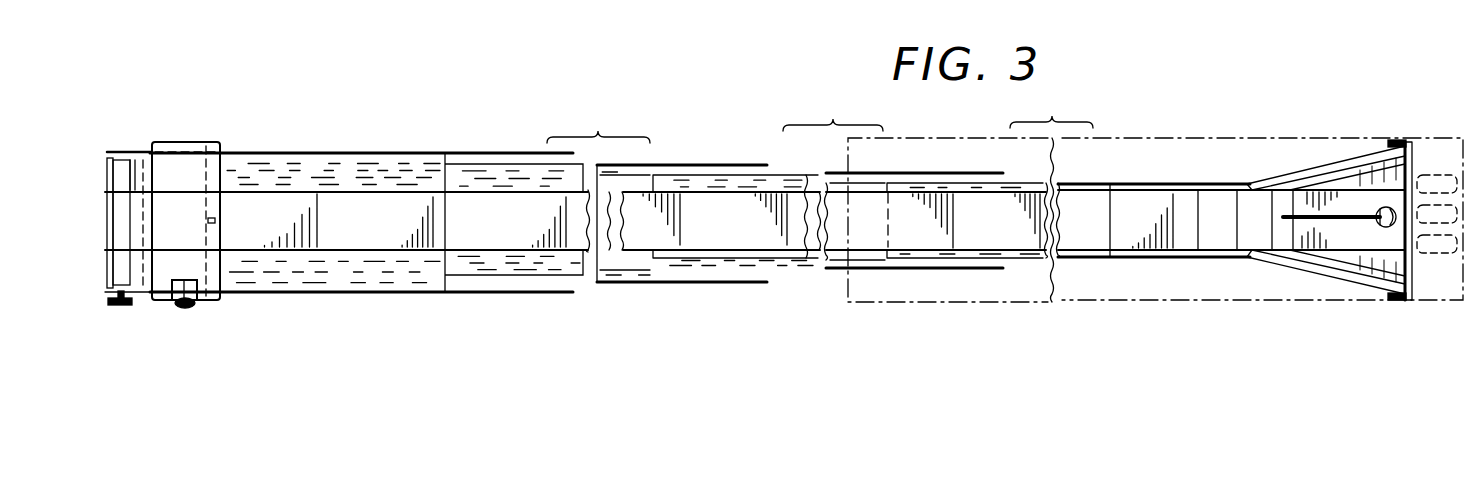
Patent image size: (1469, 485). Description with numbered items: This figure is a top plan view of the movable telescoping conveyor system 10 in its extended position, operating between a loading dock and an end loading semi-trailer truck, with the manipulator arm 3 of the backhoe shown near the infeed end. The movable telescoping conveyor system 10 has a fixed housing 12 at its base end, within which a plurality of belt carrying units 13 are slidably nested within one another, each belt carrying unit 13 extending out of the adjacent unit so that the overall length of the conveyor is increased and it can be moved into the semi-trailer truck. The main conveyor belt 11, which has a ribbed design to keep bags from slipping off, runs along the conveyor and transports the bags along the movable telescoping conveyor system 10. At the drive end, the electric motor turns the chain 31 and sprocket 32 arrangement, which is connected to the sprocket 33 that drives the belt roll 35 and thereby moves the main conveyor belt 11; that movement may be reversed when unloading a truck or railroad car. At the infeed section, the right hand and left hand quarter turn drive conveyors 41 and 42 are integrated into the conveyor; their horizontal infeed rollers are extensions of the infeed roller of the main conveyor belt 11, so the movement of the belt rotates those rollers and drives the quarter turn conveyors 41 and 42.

The manipulator arm 3 is at (1312, 256).
The movable telescoping conveyor system 10 is at (687, 132).
The main conveyor belt 11 is at (335, 190).
The fixed housing 12 is at (385, 150).
The belt carrying units 13 is at (709, 160).
The chain 31 is at (150, 308).
The sprocket 32 is at (197, 302).
The sprocket 33 is at (118, 308).
The belt roll 35 is at (106, 172).
The right hand ¼ turn drive conveyor 41 is at (1364, 262).
The left hand ¼ turn drive conveyor 42 is at (1364, 180).